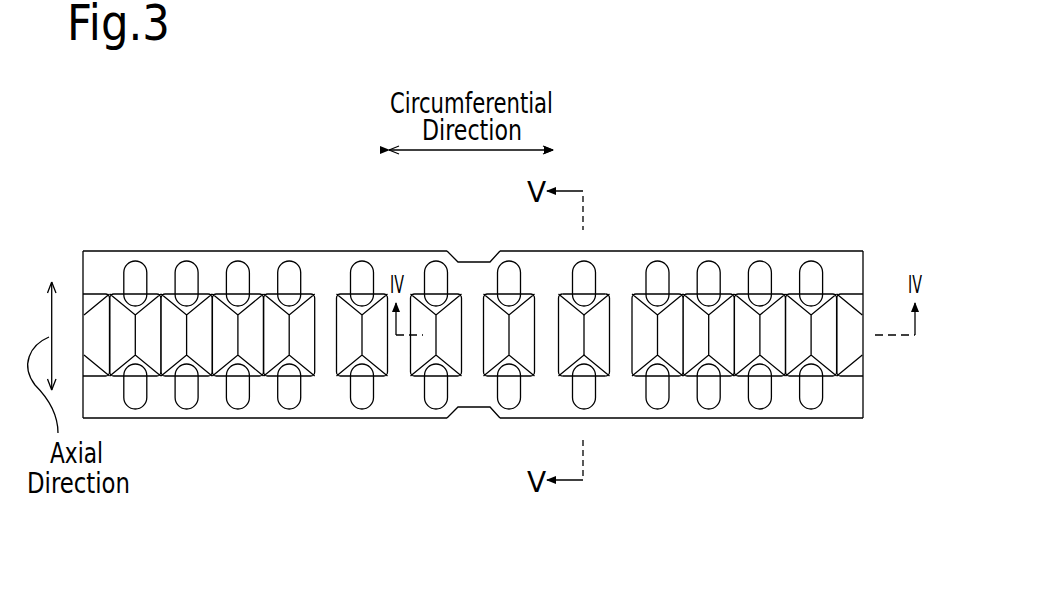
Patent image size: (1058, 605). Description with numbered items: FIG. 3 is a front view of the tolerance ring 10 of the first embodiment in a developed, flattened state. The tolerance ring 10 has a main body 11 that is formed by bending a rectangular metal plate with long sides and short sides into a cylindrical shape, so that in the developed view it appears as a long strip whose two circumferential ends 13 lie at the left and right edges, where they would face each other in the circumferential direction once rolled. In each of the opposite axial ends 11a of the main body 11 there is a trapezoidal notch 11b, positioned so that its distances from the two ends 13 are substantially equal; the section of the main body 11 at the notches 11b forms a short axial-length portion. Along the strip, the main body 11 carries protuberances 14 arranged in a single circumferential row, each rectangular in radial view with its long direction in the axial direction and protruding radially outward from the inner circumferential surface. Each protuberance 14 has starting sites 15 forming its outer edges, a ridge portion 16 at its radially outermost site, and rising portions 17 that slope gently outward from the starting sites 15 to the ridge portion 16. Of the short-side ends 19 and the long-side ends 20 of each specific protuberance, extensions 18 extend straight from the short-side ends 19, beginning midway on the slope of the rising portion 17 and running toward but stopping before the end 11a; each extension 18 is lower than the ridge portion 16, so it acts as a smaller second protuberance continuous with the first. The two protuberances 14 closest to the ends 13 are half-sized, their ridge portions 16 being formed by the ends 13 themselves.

The tolerance ring 10 is at (157, 153).
The main body 11 is at (473, 332).
The end 11a is at (323, 250).
The notch 11b is at (473, 260).
The end 13 is at (82, 253).
The protuberance 14 is at (473, 342).
The starting site 15 is at (598, 290).
The ridge portion 16 is at (582, 326).
The rising portion 17 is at (567, 347).
The extension 18 is at (583, 270).
The short-side end 19 is at (568, 288).
The long-side end 20 is at (613, 353).